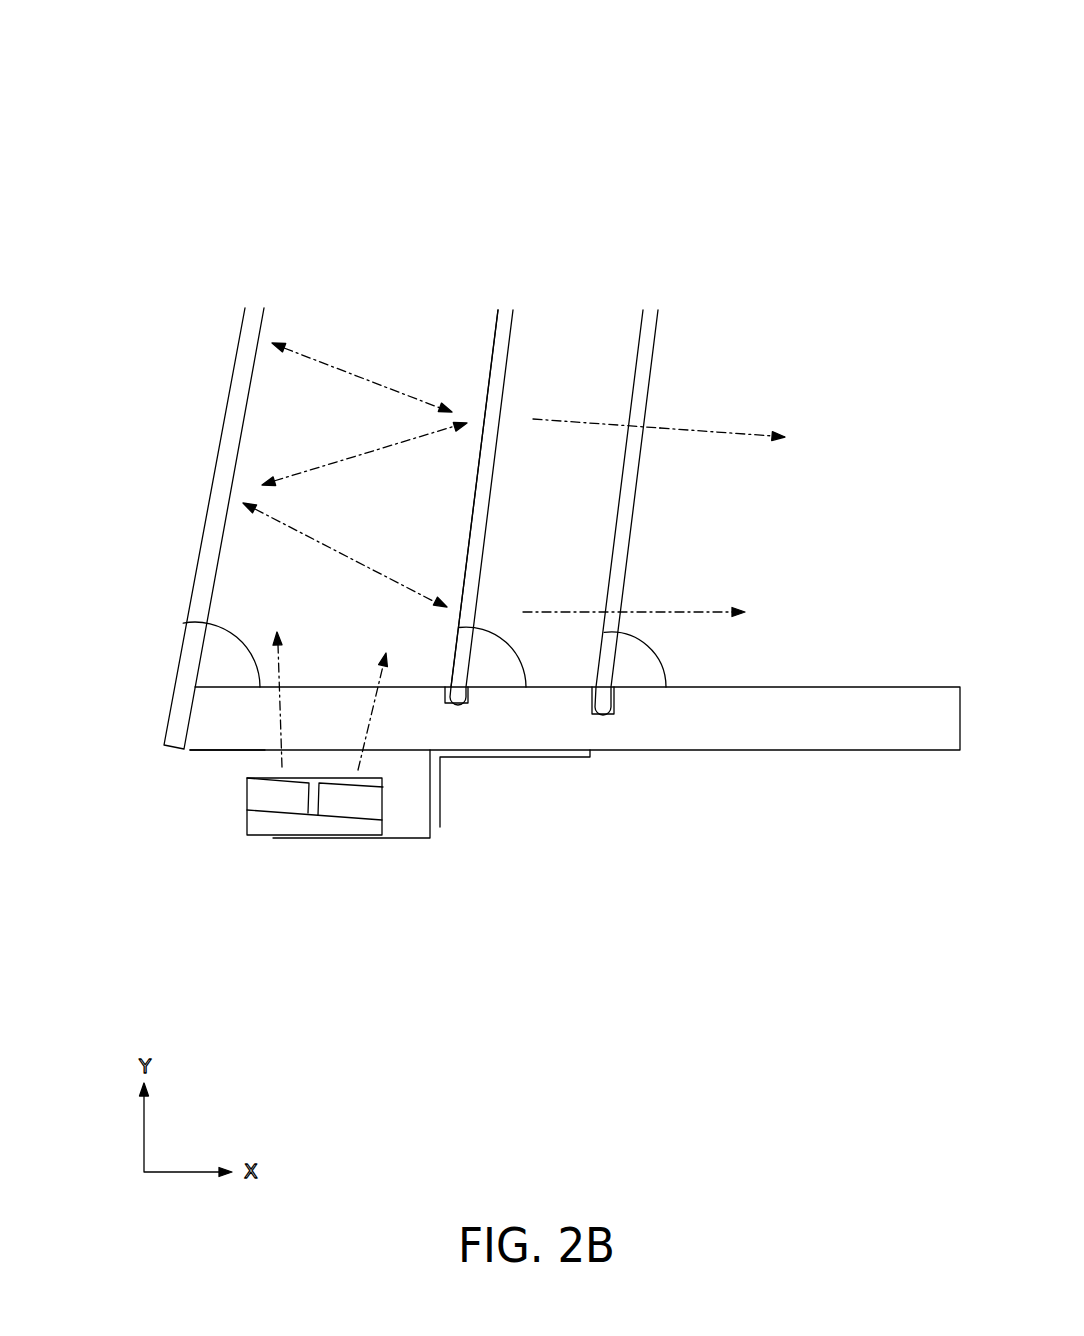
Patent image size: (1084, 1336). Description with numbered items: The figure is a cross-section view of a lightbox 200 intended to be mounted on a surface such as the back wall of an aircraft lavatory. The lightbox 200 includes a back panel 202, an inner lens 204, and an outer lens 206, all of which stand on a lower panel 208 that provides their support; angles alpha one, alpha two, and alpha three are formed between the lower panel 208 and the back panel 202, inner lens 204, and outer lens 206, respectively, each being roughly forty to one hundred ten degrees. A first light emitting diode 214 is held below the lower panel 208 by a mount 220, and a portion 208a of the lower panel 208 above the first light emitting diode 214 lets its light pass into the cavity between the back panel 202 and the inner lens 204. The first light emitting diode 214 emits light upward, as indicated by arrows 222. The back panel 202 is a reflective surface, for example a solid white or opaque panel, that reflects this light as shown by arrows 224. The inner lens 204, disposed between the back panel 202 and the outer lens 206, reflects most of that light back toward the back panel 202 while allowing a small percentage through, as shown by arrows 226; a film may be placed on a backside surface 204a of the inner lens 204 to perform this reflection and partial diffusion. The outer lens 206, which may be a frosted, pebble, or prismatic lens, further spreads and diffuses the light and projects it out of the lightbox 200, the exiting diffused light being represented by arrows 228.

The lightbox 200 is at (207, 95).
The back panel 202 is at (218, 465).
The inner lens 204 is at (497, 363).
The backside surface of inner lens 204a is at (485, 400).
The outer lens 206 is at (648, 318).
The lower panel 208 is at (800, 742).
The portion of lower panel 208a is at (210, 730).
The first light emitting diode 214 is at (263, 827).
The mount 220 is at (438, 827).
The arrows indicating emitted light 222 is at (278, 740).
The arrows indicating reflected light 224 is at (313, 357).
The arrows indicating light passing through inner lens 226 is at (543, 418).
The arrows indicating diffused light exiting lightbox 228 is at (700, 428).